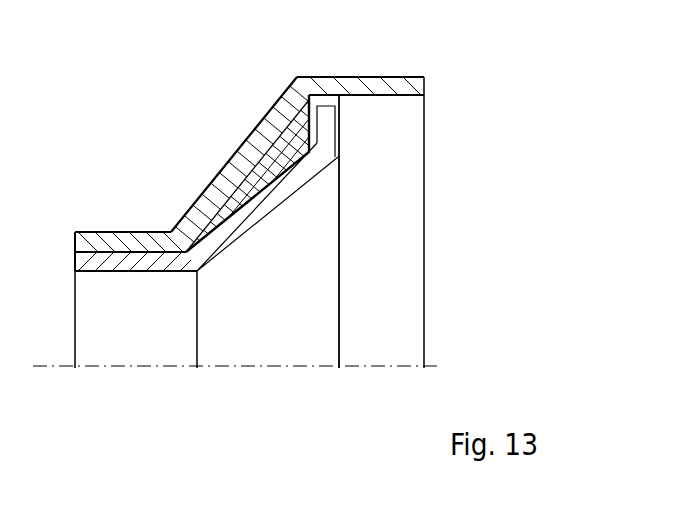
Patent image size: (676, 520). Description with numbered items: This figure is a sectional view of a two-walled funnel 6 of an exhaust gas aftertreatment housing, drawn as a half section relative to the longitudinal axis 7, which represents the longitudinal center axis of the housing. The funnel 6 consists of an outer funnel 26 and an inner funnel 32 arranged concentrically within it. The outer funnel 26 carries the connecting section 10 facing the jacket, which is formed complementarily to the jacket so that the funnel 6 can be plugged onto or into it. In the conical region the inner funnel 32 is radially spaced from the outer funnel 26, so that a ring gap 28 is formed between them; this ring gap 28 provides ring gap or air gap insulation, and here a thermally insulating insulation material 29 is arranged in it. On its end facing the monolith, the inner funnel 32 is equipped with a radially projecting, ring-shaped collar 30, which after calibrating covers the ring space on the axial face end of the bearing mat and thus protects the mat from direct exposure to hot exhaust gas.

The funnel 6 is at (108, 163).
The longitudinal axis 7 is at (108, 368).
The connecting section 10 is at (362, 88).
The outer funnel 26 is at (245, 150).
The ring gap 28 is at (311, 98).
The insulation material 29 is at (293, 115).
The collar 30 is at (330, 137).
The inner funnel 32 is at (265, 207).